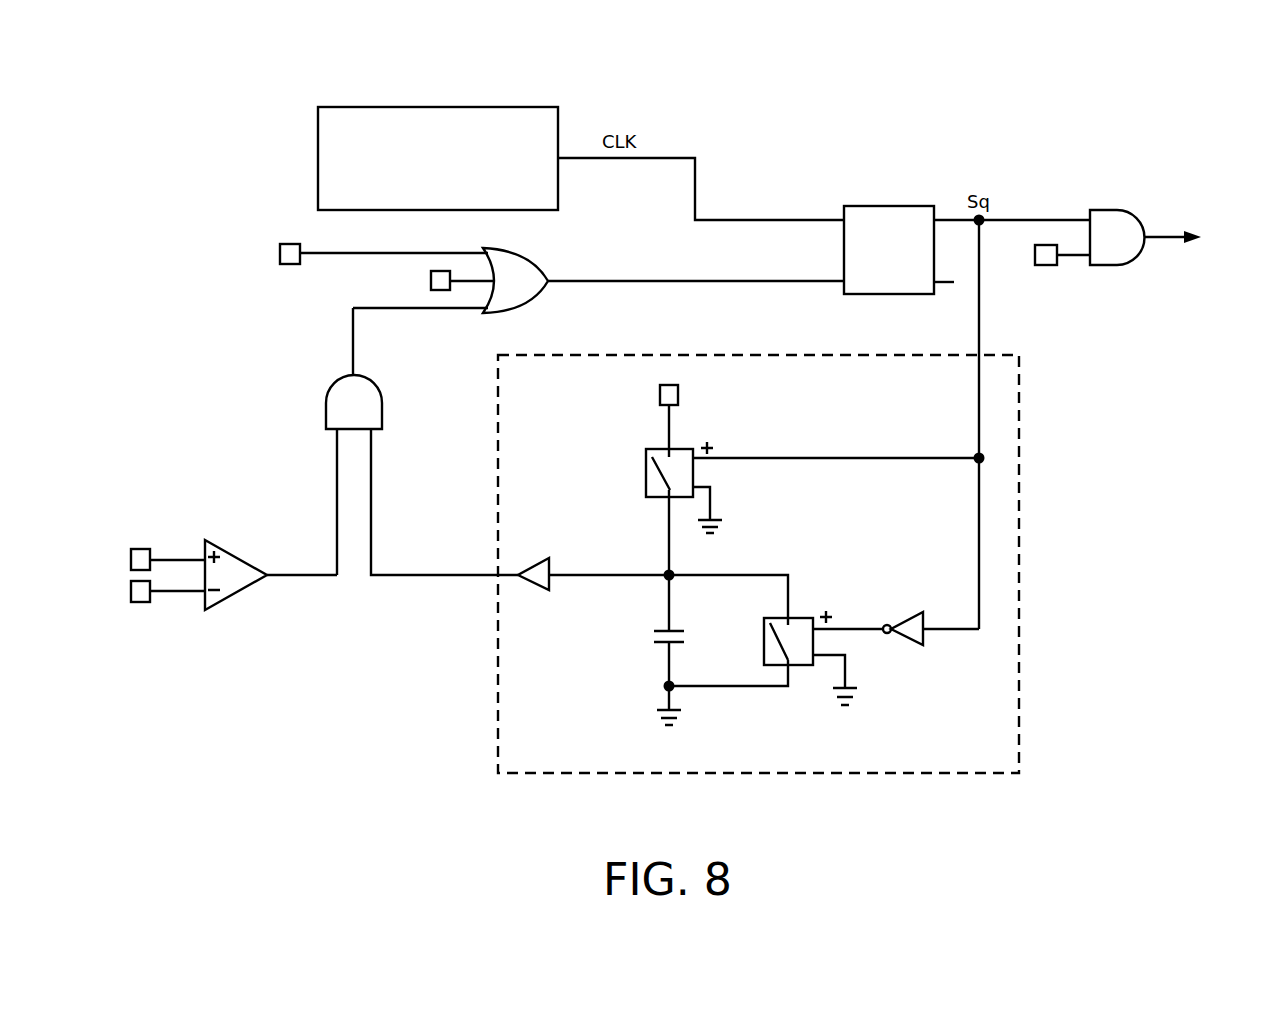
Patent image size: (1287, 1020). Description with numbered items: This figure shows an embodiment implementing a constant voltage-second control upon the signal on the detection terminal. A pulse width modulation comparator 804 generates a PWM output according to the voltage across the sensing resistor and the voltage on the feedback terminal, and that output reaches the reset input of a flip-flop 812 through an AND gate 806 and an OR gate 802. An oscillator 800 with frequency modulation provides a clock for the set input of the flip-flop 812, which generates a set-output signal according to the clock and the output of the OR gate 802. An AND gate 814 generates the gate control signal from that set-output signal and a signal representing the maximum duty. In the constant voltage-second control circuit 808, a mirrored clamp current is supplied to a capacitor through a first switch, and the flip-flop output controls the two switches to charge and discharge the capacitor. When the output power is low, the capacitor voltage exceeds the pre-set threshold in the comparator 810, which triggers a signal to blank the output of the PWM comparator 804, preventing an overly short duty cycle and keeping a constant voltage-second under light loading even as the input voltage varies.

The oscillator with frequency modulation 800 is at (437, 107).
The OR gate 802 is at (523, 255).
The PWM comparator 804 is at (227, 540).
The AND gate 806 is at (328, 402).
The constant voltage-second control circuit 808 is at (1020, 568).
The comparator 810 is at (540, 560).
The flip-flop 812 is at (884, 206).
The AND gate 814 is at (1112, 210).